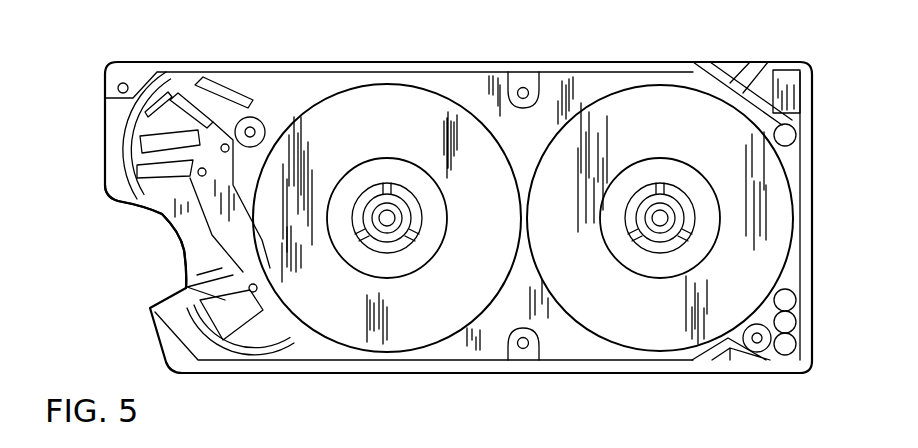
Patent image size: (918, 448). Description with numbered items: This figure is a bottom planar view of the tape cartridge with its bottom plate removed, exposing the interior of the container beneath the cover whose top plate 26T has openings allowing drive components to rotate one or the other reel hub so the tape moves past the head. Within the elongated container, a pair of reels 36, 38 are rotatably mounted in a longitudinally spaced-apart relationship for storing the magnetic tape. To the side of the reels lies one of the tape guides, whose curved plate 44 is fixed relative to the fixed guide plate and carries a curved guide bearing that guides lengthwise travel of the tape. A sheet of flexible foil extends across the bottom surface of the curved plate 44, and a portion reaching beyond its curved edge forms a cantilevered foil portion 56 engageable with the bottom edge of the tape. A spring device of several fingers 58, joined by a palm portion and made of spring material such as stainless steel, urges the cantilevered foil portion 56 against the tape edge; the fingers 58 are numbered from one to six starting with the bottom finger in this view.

The top plate 26T is at (293, 90).
The reel 36 is at (398, 97).
The reel 38 is at (640, 97).
The curved plate 44 is at (148, 208).
The cantilevered foil portion 56 is at (130, 152).
The fingers 58 is at (190, 100).